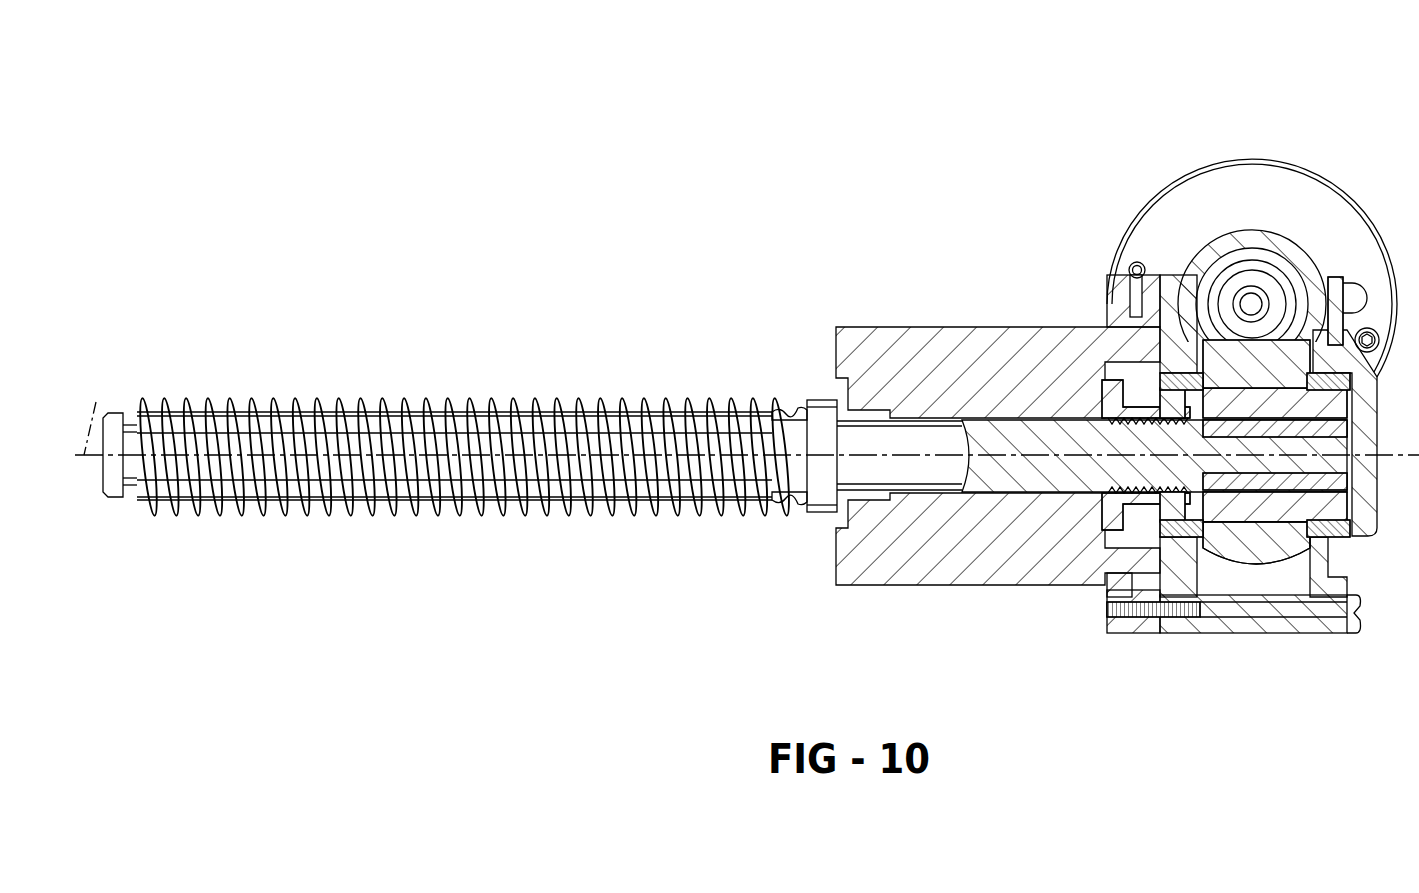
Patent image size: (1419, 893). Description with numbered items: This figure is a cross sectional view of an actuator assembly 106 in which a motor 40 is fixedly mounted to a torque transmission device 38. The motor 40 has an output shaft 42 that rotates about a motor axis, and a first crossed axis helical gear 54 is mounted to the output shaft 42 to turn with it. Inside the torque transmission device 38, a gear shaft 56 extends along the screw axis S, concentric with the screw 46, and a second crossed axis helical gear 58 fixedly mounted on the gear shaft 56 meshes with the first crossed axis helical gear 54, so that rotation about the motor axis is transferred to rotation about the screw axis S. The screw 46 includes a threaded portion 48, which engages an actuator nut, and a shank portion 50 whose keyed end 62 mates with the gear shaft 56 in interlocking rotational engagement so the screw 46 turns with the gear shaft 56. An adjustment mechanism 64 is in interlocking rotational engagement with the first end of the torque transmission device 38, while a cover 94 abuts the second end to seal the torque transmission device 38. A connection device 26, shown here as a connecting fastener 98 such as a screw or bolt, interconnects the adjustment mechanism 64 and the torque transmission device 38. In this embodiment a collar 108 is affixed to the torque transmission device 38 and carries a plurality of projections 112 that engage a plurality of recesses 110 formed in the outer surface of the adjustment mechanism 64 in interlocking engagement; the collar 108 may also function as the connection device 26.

The screw axis S is at (90, 415).
The connection device 26 is at (1107, 611).
The torque transmission device 38 is at (1250, 635).
The motor 40 is at (1283, 162).
The output shaft 42 is at (1258, 302).
The screw 46 is at (402, 396).
The threaded portion 48 is at (648, 520).
The shank portion 50 is at (960, 412).
The first crossed axis helical gear 54 is at (1253, 272).
The gear shaft 56 is at (1330, 403).
The second crossed axis helical gear 58 is at (1292, 360).
The keyed end 62 is at (1320, 448).
The adjustment mechanism 64 is at (950, 327).
The cover 94 is at (1337, 503).
The connecting fastener 98 is at (1353, 600).
The first alternative embodiment of the actuator assembly 106 is at (1107, 128).
The collar 108 is at (1108, 300).
The recesses 110 is at (1105, 325).
The projections 112 is at (1130, 268).